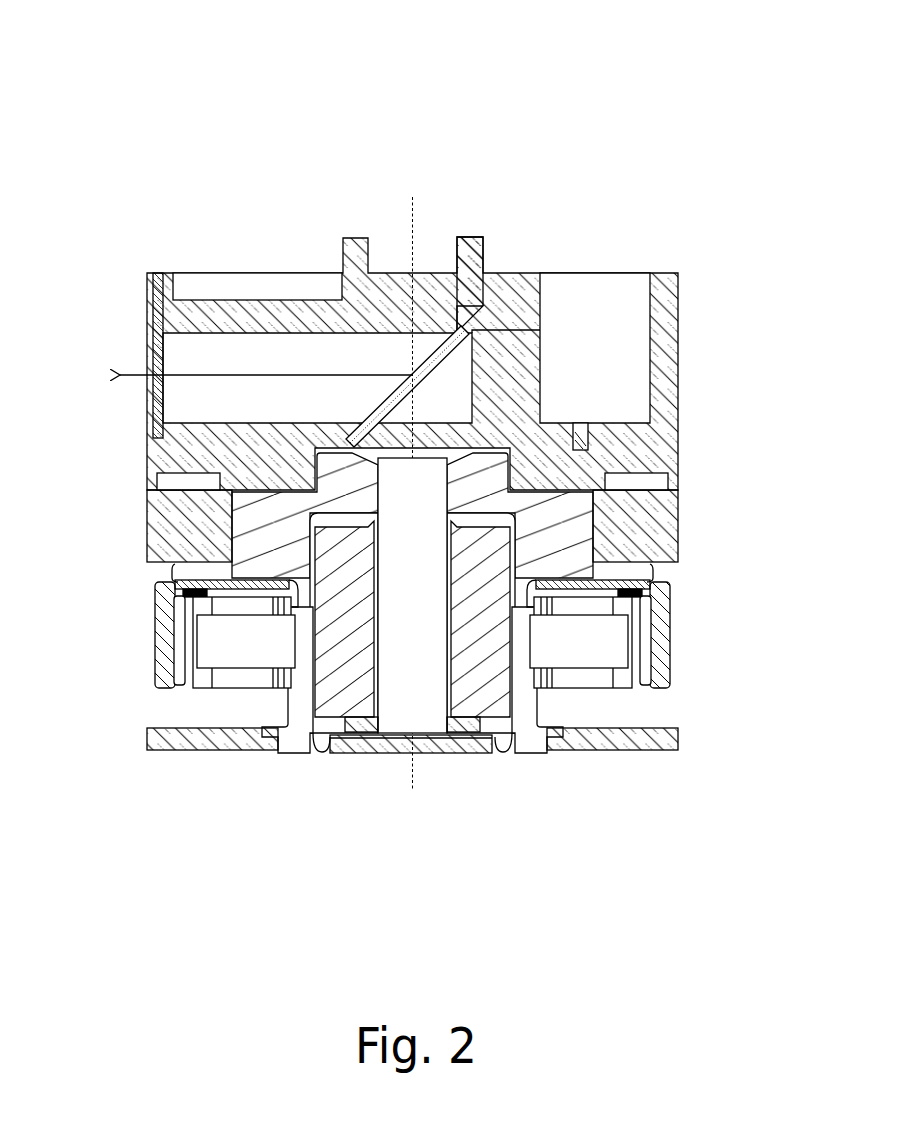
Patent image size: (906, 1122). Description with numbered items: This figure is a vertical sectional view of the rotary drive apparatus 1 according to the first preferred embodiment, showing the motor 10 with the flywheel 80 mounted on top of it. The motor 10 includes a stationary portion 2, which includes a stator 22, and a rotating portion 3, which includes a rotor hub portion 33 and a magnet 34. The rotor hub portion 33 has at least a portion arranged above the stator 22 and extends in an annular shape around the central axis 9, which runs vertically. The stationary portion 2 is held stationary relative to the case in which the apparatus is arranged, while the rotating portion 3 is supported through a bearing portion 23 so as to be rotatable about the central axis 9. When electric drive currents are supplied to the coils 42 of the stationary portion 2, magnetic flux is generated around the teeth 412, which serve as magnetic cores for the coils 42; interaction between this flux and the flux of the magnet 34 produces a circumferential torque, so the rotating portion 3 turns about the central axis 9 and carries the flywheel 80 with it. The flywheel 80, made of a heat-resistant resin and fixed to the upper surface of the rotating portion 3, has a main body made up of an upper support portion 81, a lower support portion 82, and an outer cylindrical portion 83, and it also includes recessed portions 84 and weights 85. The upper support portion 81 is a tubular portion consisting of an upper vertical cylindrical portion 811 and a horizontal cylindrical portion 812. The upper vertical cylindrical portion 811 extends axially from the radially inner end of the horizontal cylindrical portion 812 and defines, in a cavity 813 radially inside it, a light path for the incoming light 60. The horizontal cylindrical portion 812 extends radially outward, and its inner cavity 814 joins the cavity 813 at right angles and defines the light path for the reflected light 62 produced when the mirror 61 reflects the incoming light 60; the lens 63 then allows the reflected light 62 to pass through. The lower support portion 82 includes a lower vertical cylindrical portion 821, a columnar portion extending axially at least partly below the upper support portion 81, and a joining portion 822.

The rotary drive apparatus 1 is at (405, 422).
The stationary portion 2 is at (334, 768).
The rotating portion 3 is at (115, 548).
The central axis 9 is at (411, 220).
The motor 10 is at (451, 646).
The stator 22 is at (578, 701).
The bearing portion 23 is at (466, 737).
The rotor hub portion 33 is at (482, 473).
The magnet 34 is at (642, 658).
The coils 42 is at (237, 605).
The teeth 412 is at (245, 655).
The incoming light 60 is at (412, 366).
The mirror 61 is at (458, 242).
The reflected light 62 is at (224, 378).
The lens 63 is at (157, 290).
The flywheel 80 is at (405, 419).
The upper support portion 81 is at (270, 218).
The upper vertical cylindrical portion 811 is at (355, 263).
The horizontal cylindrical portion 812 is at (293, 318).
The cavity 813 is at (430, 302).
The cavity 814 is at (196, 398).
The lower support portion 82 is at (370, 269).
The lower vertical cylindrical portion 821 is at (525, 365).
The joining portion 822 is at (268, 440).
The outer cylindrical portion 83 is at (665, 305).
The recessed portions 84 is at (581, 416).
The weights 85 is at (598, 438).